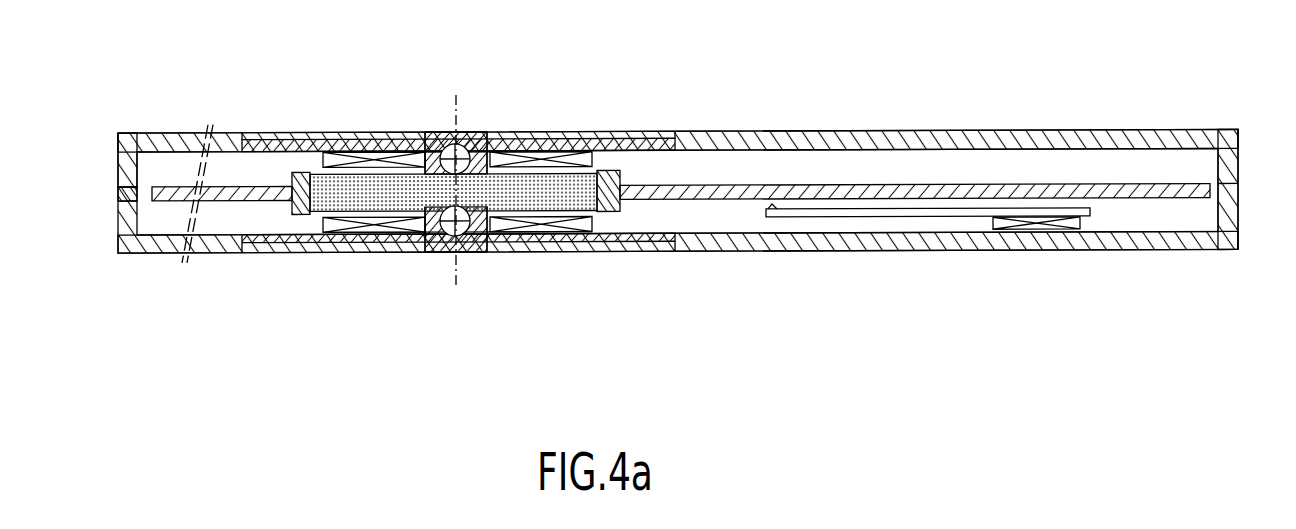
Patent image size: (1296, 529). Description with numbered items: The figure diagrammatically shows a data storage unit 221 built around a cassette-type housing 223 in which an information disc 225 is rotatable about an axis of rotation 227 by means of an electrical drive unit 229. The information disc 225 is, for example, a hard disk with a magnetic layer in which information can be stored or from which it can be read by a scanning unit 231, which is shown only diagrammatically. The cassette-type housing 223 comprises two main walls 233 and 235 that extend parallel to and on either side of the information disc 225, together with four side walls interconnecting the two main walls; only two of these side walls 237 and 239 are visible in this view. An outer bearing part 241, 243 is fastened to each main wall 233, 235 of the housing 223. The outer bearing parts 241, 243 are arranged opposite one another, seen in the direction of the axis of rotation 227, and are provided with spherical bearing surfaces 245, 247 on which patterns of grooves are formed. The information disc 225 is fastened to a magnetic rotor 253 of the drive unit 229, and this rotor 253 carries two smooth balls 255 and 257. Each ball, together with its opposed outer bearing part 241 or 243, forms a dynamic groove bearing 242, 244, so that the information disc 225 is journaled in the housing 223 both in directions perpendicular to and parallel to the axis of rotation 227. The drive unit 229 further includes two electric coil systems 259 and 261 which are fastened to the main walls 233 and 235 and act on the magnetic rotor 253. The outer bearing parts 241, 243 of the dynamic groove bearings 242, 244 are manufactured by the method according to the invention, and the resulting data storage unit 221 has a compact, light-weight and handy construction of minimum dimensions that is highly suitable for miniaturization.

The data storage unit 221 is at (137, 260).
The cassette-type housing 223 is at (117, 202).
The information disc 225 is at (832, 190).
The axis of rotation 227 is at (457, 102).
The electrical drive unit 229 is at (598, 168).
The scanning unit 231 is at (942, 213).
The main wall 233 is at (910, 143).
The main wall 235 is at (836, 238).
The side wall 237 is at (127, 155).
The side wall 239 is at (1238, 212).
The outer bearing part 241 is at (437, 130).
The dynamic groove bearing 242 is at (445, 130).
The outer bearing part 243 is at (447, 253).
The dynamic groove bearing 244 is at (472, 253).
The spherical bearing surface 245 is at (433, 131).
The spherical bearing surface 247 is at (443, 243).
The magnetic rotor 253 is at (335, 240).
The smooth ball 255 is at (477, 130).
The smooth ball 257 is at (477, 248).
The electric coil system 259 is at (575, 143).
The electric coil system 261 is at (548, 240).